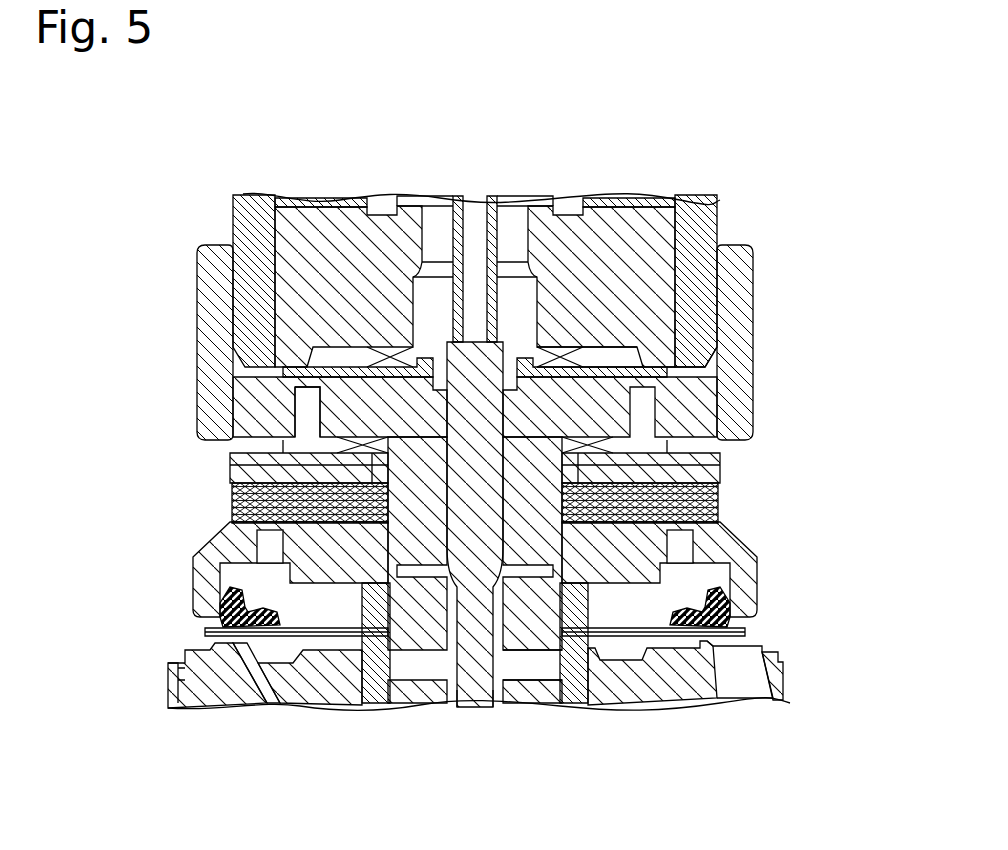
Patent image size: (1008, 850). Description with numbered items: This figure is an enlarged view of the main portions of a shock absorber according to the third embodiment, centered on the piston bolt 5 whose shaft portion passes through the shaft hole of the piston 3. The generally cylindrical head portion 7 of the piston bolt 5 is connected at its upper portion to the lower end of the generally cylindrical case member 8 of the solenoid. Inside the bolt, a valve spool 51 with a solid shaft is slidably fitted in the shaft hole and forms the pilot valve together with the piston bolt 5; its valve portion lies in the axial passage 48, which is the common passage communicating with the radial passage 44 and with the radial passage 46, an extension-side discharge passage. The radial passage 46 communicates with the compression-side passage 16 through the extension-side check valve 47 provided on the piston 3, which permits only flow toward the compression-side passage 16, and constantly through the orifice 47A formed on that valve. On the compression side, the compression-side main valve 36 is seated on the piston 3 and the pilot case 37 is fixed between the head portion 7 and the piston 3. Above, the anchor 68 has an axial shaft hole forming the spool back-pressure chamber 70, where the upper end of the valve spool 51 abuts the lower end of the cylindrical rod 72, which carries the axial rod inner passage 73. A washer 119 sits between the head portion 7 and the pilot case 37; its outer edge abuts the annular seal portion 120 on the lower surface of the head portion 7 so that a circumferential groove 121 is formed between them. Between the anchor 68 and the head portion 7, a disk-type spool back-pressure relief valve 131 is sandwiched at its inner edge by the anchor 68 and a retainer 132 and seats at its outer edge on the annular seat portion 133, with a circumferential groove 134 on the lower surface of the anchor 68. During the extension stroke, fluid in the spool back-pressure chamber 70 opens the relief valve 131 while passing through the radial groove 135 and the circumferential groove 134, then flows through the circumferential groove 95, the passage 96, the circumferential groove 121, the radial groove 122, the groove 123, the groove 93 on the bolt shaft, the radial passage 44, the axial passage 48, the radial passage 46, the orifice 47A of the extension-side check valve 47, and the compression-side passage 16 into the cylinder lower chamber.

The piston 3 is at (170, 684).
The piston bolt 5 is at (402, 703).
The head portion 7 is at (193, 290).
The case member 8 is at (256, 212).
The compression-side passage 16 is at (258, 690).
The compression-side main valve 36 is at (743, 632).
The pilot case 37 is at (760, 567).
The radial passage 44 is at (278, 550).
The radial passage 46 is at (545, 673).
The extension-side check valve 47 is at (590, 647).
The orifice 47A is at (720, 662).
The axial passage 48 is at (445, 700).
The valve spool 51 is at (466, 704).
The anchor 68 is at (318, 232).
The spool back-pressure chamber 70 is at (423, 290).
The rod 72 is at (442, 205).
The rod inner passage 73 is at (478, 205).
The groove 93 is at (268, 492).
The circumferential groove 95 is at (700, 380).
The passage 96 is at (300, 400).
The washer 119 is at (262, 466).
The annular seal portion 120 is at (248, 438).
The circumferential groove 121 is at (262, 412).
The radial groove 122 is at (720, 445).
The groove 123 is at (713, 478).
The spool back-pressure relief valve 131 is at (657, 360).
The retainer 132 is at (607, 360).
The annular seat portion 133 is at (712, 352).
The circumferential groove 134 is at (640, 350).
The radial groove 135 is at (563, 350).